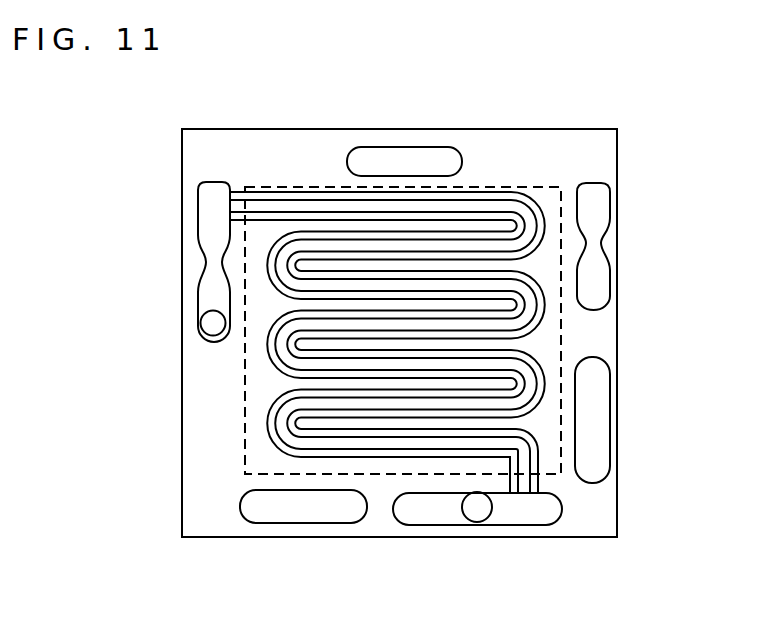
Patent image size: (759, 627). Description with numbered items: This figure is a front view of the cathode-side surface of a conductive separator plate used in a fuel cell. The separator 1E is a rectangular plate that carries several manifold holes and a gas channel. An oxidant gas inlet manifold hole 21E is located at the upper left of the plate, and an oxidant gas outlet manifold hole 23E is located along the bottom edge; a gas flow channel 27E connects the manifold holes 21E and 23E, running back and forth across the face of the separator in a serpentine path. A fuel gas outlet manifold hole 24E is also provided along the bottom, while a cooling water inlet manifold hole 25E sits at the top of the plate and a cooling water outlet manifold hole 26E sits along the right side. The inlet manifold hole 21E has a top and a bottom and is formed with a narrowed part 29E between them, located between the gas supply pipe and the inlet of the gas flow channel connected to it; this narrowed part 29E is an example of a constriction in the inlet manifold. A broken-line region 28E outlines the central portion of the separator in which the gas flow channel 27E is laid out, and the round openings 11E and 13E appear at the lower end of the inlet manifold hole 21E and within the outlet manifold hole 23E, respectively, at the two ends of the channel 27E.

The separator 1E is at (553, 129).
The inlet port 11E is at (207, 325).
The outlet port 13E is at (477, 510).
The oxidant gas inlet manifold hole 21E is at (198, 212).
The oxidant gas outlet manifold hole 23E is at (430, 525).
The fuel gas outlet manifold hole 24E is at (293, 523).
The cooling water inlet manifold hole 25E is at (403, 147).
The cooling water outlet manifold hole 26E is at (607, 417).
The gas flow channel 27E is at (327, 188).
The heat exchange region 28E is at (561, 343).
The narrowed part 29E is at (594, 230).